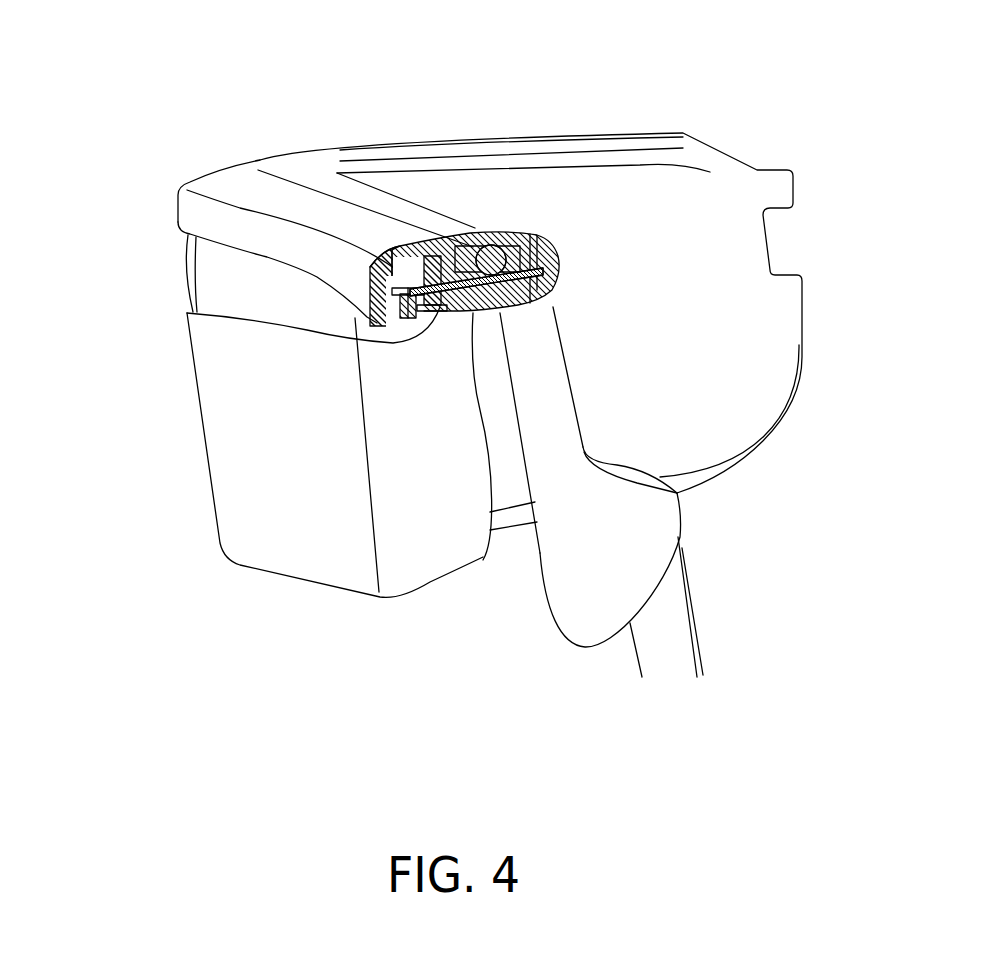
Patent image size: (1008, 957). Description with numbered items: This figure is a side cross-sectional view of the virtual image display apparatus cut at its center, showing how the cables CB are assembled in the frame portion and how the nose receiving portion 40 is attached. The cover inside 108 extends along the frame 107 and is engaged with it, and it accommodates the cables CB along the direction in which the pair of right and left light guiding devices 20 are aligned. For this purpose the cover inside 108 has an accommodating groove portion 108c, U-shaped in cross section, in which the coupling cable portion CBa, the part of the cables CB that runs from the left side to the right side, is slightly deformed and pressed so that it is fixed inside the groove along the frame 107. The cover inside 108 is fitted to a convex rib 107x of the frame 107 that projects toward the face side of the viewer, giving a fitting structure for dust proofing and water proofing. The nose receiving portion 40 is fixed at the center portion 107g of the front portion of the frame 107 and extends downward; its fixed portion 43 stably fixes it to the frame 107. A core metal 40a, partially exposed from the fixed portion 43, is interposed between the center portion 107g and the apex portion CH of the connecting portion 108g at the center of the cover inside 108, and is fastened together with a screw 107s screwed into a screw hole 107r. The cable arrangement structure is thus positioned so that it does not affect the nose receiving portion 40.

The light guiding device 20 is at (340, 560).
The nose receiving portion 40 is at (580, 617).
The core metal 40a is at (487, 237).
The fixed portion 43 is at (555, 245).
The frame 107 is at (440, 250).
The center portion 107g is at (413, 265).
The screw 107s is at (437, 262).
The rib 107x is at (457, 250).
The screw hole 107r is at (187, 313).
The cover inside 108 is at (547, 193).
The accommodating groove portion 108c is at (527, 240).
The connecting portion 108g is at (480, 313).
The cables CB is at (505, 240).
The coupling cable portion CBa is at (475, 177).
The apex portion CH is at (563, 250).